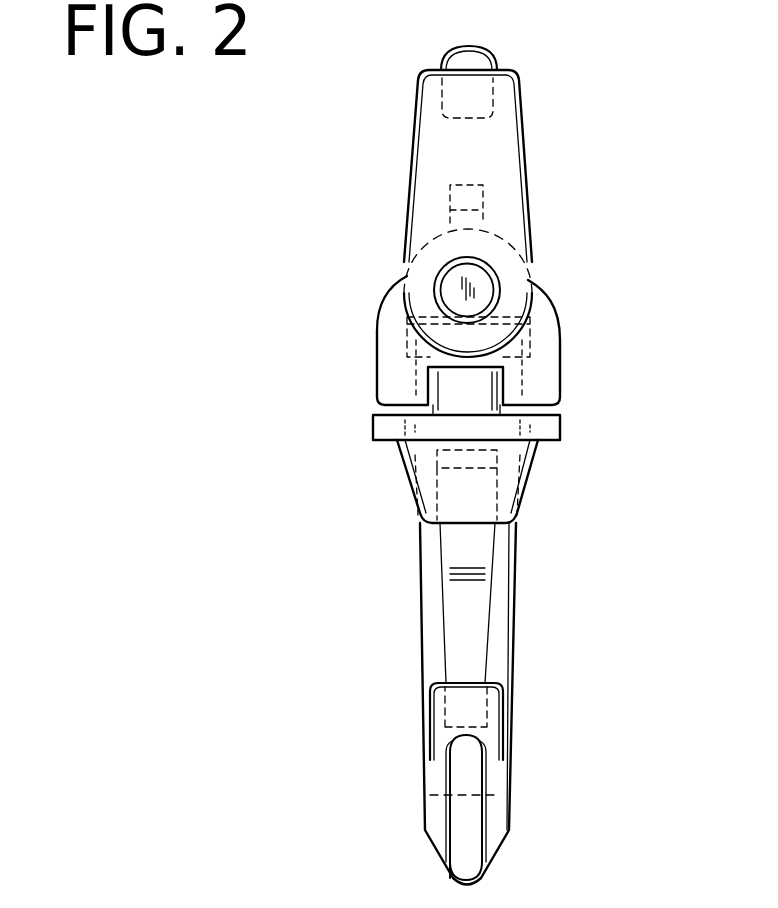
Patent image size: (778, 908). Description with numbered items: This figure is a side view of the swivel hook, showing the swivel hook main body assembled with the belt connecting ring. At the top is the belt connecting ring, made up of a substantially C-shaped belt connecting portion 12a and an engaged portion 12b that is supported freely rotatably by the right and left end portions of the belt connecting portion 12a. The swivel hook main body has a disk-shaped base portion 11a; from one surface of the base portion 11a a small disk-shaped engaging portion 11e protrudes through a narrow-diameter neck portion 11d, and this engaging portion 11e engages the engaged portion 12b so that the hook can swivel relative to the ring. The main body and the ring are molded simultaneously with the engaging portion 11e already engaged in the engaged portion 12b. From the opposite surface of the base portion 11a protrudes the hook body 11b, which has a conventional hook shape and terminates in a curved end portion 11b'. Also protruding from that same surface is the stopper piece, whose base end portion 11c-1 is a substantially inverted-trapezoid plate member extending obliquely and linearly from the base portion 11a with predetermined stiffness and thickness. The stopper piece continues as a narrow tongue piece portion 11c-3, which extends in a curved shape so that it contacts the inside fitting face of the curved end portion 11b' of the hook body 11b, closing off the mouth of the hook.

The belt connecting portion 12a is at (520, 140).
The engaged portion 12b is at (378, 337).
The engaging portion 11e is at (405, 358).
The neck portion 11d is at (440, 378).
The base portion 11a is at (550, 424).
The base end portion 11c-1 is at (455, 488).
The tongue piece portion 11c-3 is at (463, 598).
The hook body 11b is at (529, 704).
The curved end portion 11b' is at (538, 781).